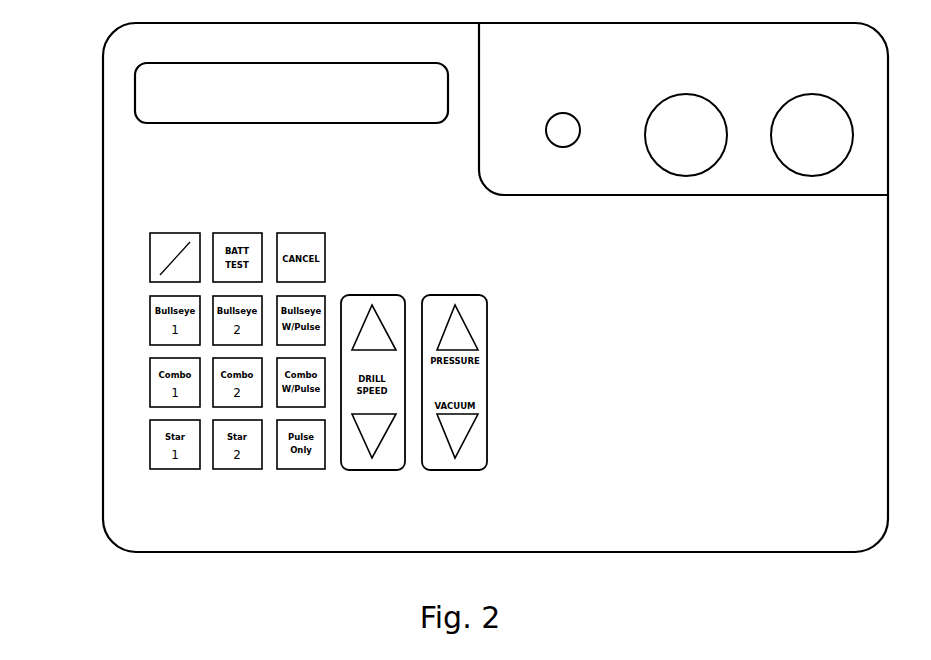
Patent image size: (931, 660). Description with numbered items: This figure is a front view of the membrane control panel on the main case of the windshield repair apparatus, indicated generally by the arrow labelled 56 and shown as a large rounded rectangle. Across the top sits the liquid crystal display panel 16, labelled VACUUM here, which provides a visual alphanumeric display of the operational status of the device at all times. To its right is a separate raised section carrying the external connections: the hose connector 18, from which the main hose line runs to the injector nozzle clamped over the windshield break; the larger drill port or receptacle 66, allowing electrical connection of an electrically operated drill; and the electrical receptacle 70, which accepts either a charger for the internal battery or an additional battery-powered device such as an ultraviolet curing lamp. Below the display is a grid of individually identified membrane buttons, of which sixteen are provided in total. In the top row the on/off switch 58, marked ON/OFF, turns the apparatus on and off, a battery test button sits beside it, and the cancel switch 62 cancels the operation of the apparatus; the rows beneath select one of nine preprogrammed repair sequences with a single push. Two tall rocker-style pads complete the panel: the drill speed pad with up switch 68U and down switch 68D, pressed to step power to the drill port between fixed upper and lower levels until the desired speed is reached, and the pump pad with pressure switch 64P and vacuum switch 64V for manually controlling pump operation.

The control panel 56 is at (100, 407).
The liquid crystal display (LCD) panel 16 is at (165, 92).
The cancel switch 62 is at (322, 250).
The hose connector 18 is at (563, 127).
The drill port or receptacle 66 is at (685, 123).
The electrical receptacle 70 is at (820, 112).
The on/off switch 58 is at (158, 260).
The drill speed up switch 68U is at (360, 348).
The drill speed down switch 68D is at (380, 440).
The pump pressure switch 64P is at (478, 370).
The pump vacuum switch 64V is at (457, 440).